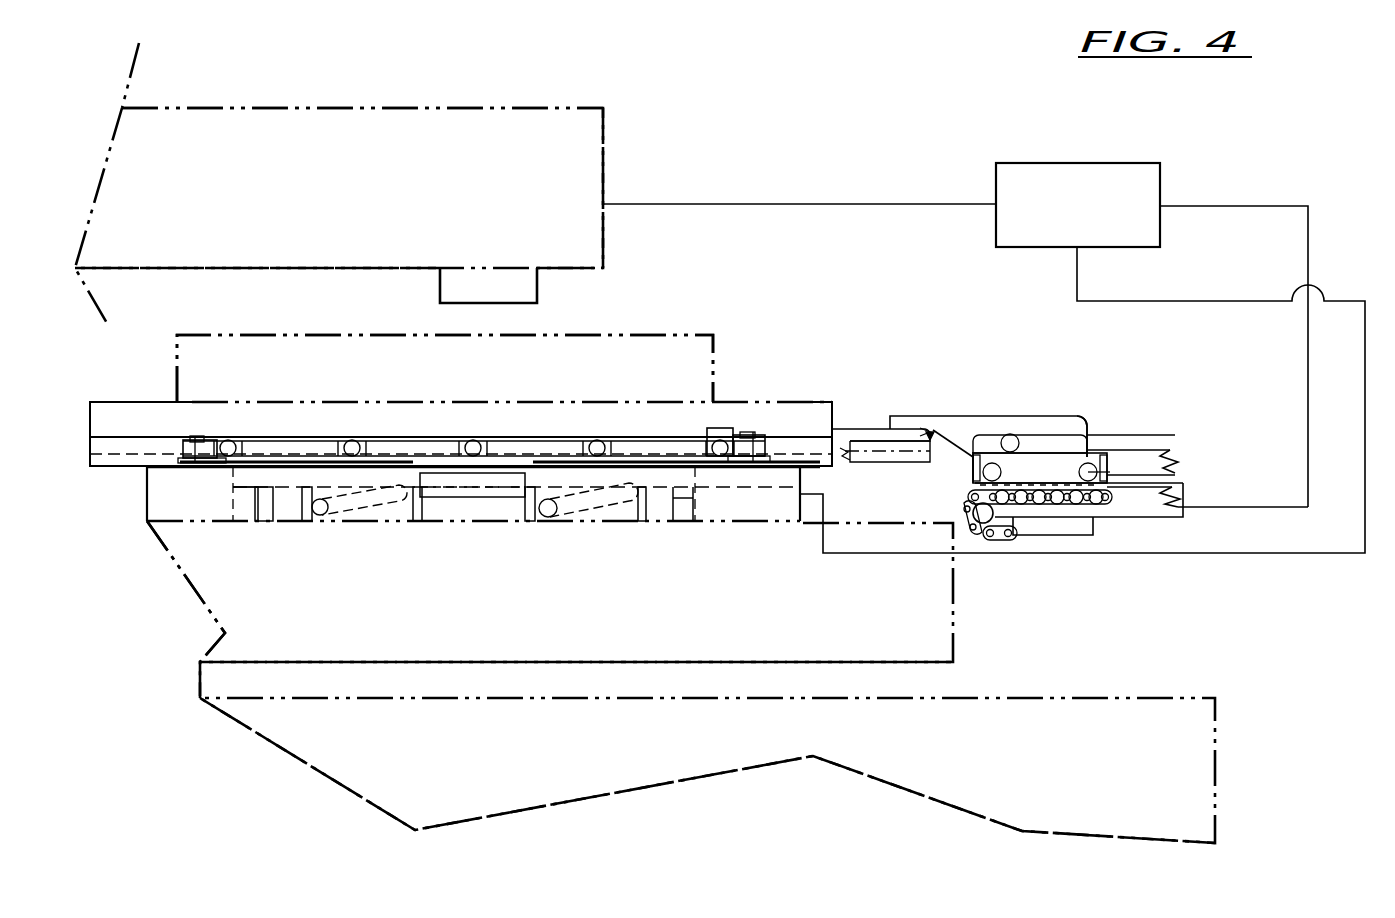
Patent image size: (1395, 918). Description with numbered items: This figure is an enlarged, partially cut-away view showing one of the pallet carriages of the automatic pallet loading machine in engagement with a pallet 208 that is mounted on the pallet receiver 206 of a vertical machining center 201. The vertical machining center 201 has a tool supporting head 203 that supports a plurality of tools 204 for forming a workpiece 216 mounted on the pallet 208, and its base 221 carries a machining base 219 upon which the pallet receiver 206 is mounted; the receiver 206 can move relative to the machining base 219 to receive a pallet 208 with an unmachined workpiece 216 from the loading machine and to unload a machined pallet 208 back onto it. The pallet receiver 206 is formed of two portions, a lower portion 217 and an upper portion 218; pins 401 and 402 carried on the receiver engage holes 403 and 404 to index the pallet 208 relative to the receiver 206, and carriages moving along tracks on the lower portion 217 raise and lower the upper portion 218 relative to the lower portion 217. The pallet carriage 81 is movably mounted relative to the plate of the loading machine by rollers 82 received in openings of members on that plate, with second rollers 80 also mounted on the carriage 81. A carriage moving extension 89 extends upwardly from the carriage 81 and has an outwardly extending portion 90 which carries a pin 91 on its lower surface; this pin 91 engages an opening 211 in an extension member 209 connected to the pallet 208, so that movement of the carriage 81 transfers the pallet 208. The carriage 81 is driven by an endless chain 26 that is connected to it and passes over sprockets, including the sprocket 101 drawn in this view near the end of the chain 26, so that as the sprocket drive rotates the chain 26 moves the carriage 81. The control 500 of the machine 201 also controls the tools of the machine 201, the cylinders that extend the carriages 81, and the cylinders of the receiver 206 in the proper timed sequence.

The vertical machining center 201 is at (750, 115).
The tool supporting head 203 is at (552, 190).
The tools 204 is at (510, 288).
The pallet receiver 206 is at (145, 517).
The pallet 208 is at (812, 412).
The extension member 209 is at (868, 433).
The opening 211 is at (900, 460).
The workpiece 216 is at (683, 360).
The lower portion 217 is at (165, 609).
The upper portion 218 is at (180, 493).
The machining base 219 is at (265, 622).
The base 221 is at (377, 740).
The pin 401 is at (235, 470).
The pin 402 is at (745, 462).
The hole 403 is at (200, 440).
The hole 404 is at (742, 438).
The control 500 is at (1060, 200).
The endless chain 26 is at (1100, 500).
The second roller 80 is at (1163, 470).
The carriage 81 is at (1050, 470).
The roller 82 is at (1015, 440).
The carriage moving extension 89 is at (1088, 427).
The outwardly extending portion 90 is at (960, 427).
The pin 91 is at (927, 427).
The sprocket 101 is at (975, 525).